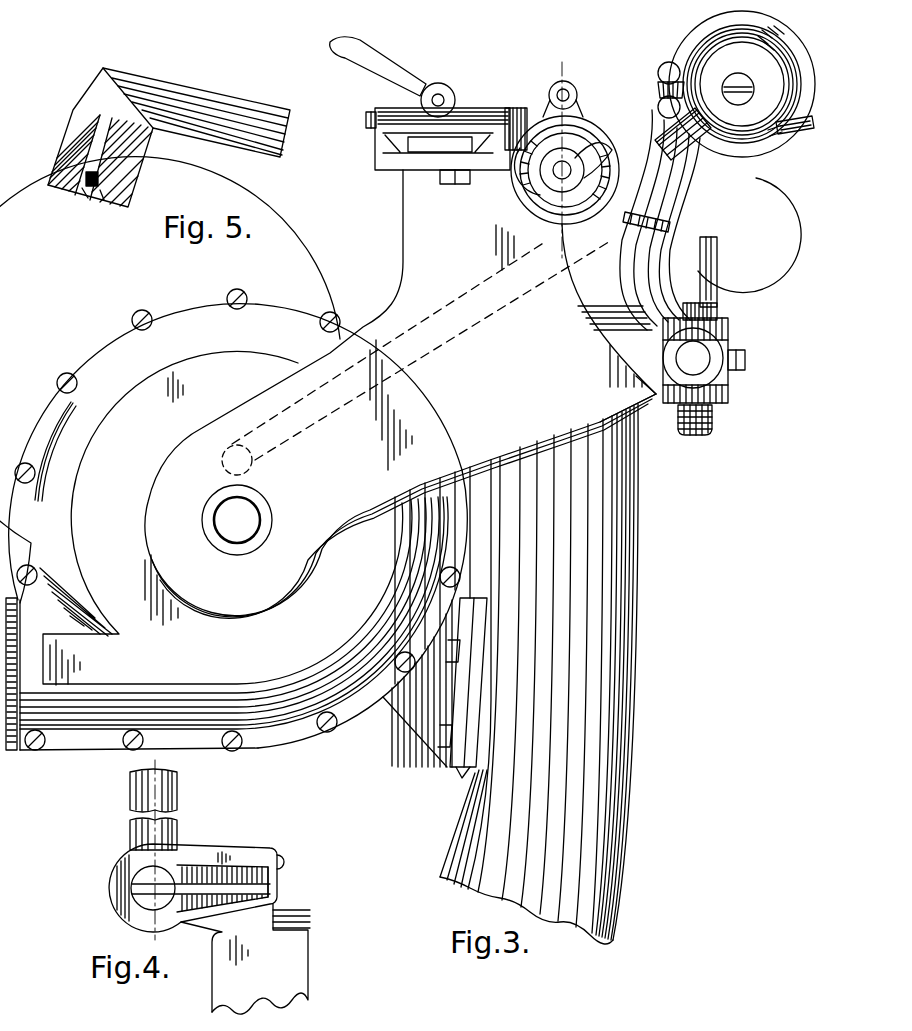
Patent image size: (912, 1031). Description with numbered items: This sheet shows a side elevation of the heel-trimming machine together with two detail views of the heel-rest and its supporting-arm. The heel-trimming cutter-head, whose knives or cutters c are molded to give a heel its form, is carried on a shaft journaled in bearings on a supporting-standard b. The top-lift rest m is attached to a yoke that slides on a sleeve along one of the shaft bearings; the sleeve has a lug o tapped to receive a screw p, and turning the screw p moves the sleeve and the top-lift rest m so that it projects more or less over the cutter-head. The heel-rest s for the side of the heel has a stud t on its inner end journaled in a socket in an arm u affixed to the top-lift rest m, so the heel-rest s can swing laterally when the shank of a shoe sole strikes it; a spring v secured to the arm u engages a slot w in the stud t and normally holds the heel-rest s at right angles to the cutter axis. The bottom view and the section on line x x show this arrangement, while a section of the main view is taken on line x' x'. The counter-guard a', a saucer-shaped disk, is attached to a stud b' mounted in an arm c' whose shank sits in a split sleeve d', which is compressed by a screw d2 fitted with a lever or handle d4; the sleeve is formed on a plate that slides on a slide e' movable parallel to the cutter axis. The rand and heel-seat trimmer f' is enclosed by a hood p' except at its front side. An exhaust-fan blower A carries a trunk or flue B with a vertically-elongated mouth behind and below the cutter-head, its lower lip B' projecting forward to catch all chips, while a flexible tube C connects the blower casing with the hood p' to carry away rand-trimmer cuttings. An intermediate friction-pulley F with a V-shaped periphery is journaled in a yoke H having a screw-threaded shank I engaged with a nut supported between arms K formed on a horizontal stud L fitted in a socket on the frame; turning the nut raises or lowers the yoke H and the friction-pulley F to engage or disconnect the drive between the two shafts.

In FIG. 3, the exhaust-fan blower A is at (243, 467).
In FIG. 3, the trunk or flue B is at (400, 394).
In FIG. 3, the lip B' is at (636, 419).
In FIG. 3, the tube C is at (690, 160).
In FIG. 3, the intermediate friction-pulley F is at (730, 274).
In FIG. 3, the yoke H is at (720, 303).
In FIG. 3, the arms K is at (730, 338).
In FIG. 3, the horizontal stud L is at (693, 358).
In FIG. 3, the screw-threaded shank I is at (713, 422).
In FIG. 3, the counter-guard a' is at (562, 191).
In FIG. 3, the supporting-standard b is at (528, 674).
In FIG. 3, the stud b' is at (484, 215).
In FIG. 3, the knives or cutters c is at (555, 149).
In FIG. 3, the arm c' is at (456, 166).
In FIG. 3, the split sleeve or socket d' is at (508, 112).
In FIG. 3, the screw d2 is at (441, 95).
In FIG. 3, the lever or handle d4 is at (373, 63).
In FIG. 3, the slide e' is at (416, 146).
In FIG. 3, the rand and heel-seat trimmer f' is at (742, 84).
In FIG. 3, the lug o is at (575, 92).
In FIG. 3, the screw p is at (550, 79).
In FIG. 3, the hood or shield p' is at (679, 68).
In FIG. 3, the section line x' is at (558, 152).
In FIG. 4, the section line x is at (152, 851).
In FIG. 4, the heel-rest s is at (178, 795).
In FIG. 5, the heel-rest s is at (248, 132).
In FIG. 4, the stud t is at (145, 900).
In FIG. 5, the stud t is at (101, 200).
In FIG. 4, the arm u is at (215, 858).
In FIG. 5, the arm u is at (135, 170).
In FIG. 4, the spring v is at (222, 890).
In FIG. 5, the spring v is at (86, 198).
In FIG. 4, the slot w is at (130, 888).
In FIG. 5, the slot w is at (85, 188).
In FIG. 4, the top-lift rest m is at (245, 959).